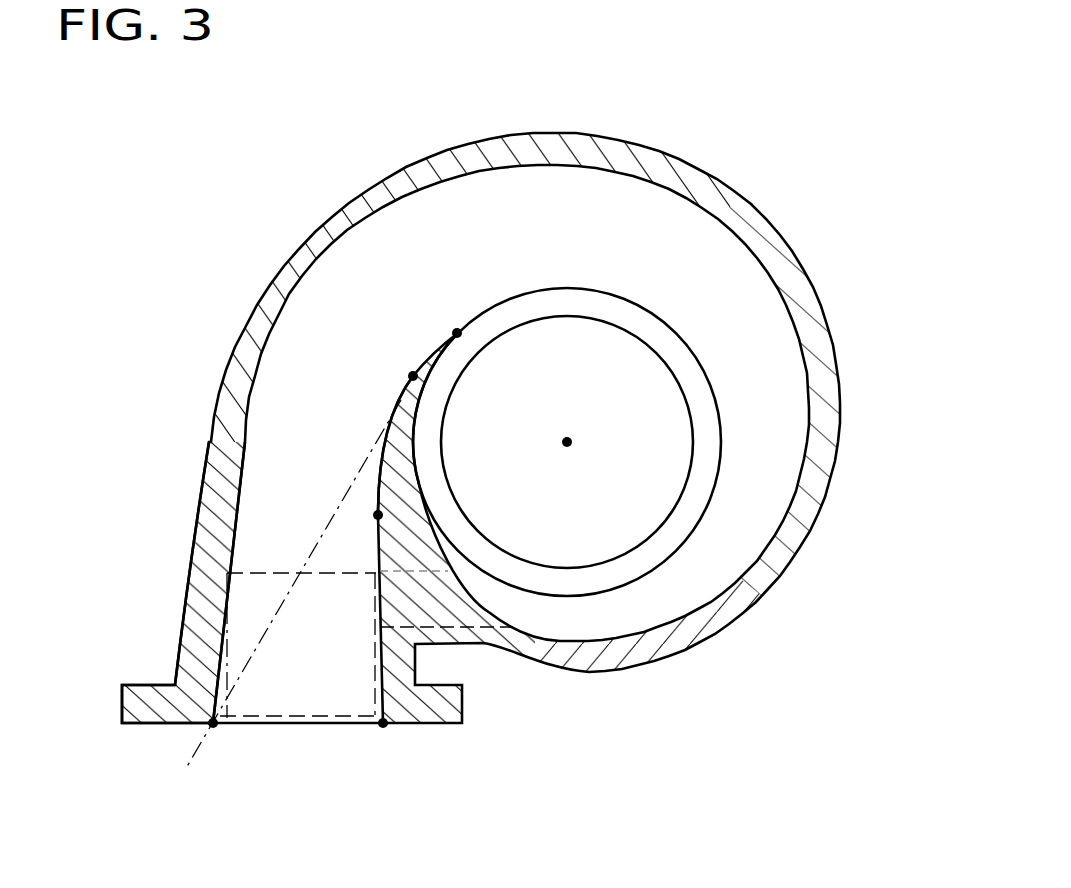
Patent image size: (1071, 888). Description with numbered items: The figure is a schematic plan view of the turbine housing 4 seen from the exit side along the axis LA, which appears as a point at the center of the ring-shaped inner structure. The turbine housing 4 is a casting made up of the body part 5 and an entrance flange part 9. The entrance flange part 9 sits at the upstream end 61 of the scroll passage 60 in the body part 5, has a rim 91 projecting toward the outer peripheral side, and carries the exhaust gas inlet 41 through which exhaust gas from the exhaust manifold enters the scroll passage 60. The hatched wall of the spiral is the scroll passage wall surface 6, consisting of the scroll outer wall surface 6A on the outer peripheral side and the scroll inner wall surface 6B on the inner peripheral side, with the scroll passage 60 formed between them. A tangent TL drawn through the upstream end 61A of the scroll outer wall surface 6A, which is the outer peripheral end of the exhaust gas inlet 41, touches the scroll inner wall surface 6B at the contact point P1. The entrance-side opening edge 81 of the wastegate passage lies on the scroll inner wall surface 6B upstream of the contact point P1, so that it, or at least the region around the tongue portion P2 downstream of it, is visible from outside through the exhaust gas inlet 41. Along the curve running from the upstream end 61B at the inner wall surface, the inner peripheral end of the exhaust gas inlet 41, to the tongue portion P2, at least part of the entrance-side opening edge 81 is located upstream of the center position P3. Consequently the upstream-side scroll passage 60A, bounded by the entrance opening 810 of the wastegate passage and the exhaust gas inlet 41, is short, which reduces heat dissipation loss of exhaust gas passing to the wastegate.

The turbine housing 4 is at (535, 444).
The body part 5 is at (470, 136).
The scroll passage wall surface 6 is at (173, 582).
The scroll outer wall surface 6A is at (234, 517).
The scroll inner wall surface 6B is at (377, 497).
The entrance flange part 9 is at (148, 663).
The rim 91 is at (138, 683).
The exhaust gas inlet 41 is at (308, 725).
The scroll passage 60 is at (579, 246).
The upstream-side scroll passage 60A is at (300, 701).
The upstream end of the scroll passage 61 is at (299, 760).
The upstream end of the scroll outer wall surface 61A is at (212, 724).
The upstream end at the scroll inner wall surface 61B is at (384, 725).
The entrance-side opening edge 81 is at (377, 624).
The entrance opening 810 is at (377, 578).
The contact point P1 is at (411, 376).
The tongue portion P2 is at (455, 333).
The center position P3 is at (376, 515).
The tangent TL is at (373, 447).
The axis LA is at (567, 447).